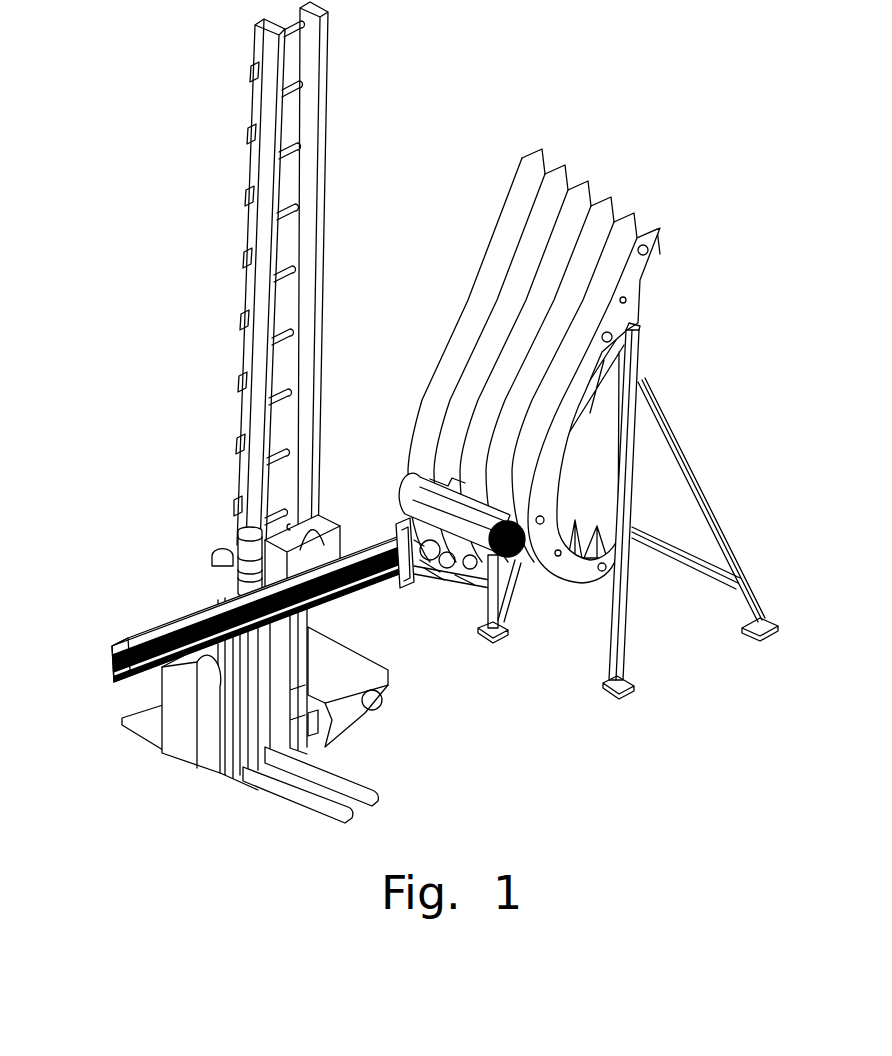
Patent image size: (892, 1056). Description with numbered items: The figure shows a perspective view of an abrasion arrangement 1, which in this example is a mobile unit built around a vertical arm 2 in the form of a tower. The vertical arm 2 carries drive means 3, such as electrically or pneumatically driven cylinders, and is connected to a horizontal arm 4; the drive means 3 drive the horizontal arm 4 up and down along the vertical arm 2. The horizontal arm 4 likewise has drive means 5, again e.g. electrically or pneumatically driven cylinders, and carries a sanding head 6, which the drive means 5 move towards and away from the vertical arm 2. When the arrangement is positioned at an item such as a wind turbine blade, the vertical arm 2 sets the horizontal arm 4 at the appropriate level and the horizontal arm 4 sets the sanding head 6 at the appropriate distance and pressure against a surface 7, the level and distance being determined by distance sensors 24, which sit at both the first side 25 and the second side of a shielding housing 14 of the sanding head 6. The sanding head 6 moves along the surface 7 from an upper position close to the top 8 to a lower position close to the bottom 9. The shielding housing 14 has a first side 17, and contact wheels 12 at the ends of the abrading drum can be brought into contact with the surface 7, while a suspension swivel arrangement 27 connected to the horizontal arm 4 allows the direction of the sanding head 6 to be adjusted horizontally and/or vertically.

The abrasion arrangement 1 is at (435, 417).
The vertical arm 2 is at (248, 225).
The drive means 3 is at (180, 733).
The horizontal arm 4 is at (140, 648).
The drive means 5 is at (233, 543).
The sanding head 6 is at (470, 572).
The surface 7 is at (614, 268).
The top 8 is at (590, 195).
The bottom 9 is at (598, 572).
The contact wheel 12 is at (527, 573).
The shielding housing 14 is at (523, 560).
The first side 17 is at (426, 476).
The distance sensor 24 is at (462, 587).
The first side 25 is at (404, 488).
The suspension swivel arrangement 27 is at (430, 580).